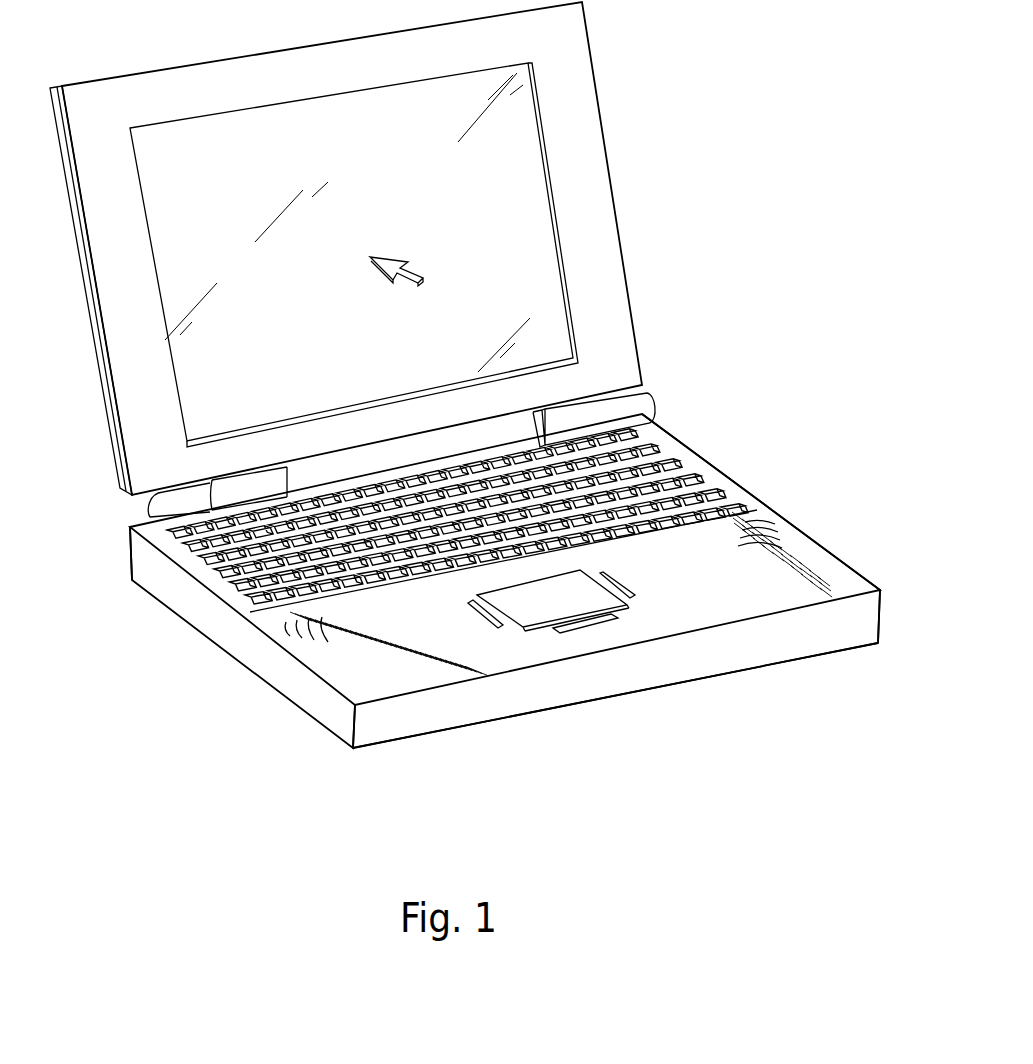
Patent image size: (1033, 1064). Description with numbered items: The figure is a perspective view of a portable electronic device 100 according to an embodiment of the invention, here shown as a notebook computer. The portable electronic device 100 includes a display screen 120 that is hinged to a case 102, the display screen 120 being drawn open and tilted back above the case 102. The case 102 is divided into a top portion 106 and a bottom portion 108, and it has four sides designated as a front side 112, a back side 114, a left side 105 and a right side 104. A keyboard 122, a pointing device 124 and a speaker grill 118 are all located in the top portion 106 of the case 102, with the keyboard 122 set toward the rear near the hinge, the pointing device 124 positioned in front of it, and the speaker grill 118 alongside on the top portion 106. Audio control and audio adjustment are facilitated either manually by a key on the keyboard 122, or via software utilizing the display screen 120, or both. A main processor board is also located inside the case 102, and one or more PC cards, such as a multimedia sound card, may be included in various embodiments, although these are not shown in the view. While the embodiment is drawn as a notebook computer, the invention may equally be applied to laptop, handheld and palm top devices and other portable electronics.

The portable electronic device 100 is at (757, 59).
The case 102 is at (787, 507).
The right side 104 is at (840, 553).
The left side 105 is at (333, 723).
The top portion 106 is at (332, 658).
The bottom portion 108 is at (195, 628).
The front side 112 is at (731, 667).
The back side 114 is at (130, 567).
The speaker grill 118 is at (767, 520).
The display screen 120 is at (633, 308).
The keyboard 122 is at (683, 455).
The pointing device 124 is at (557, 597).